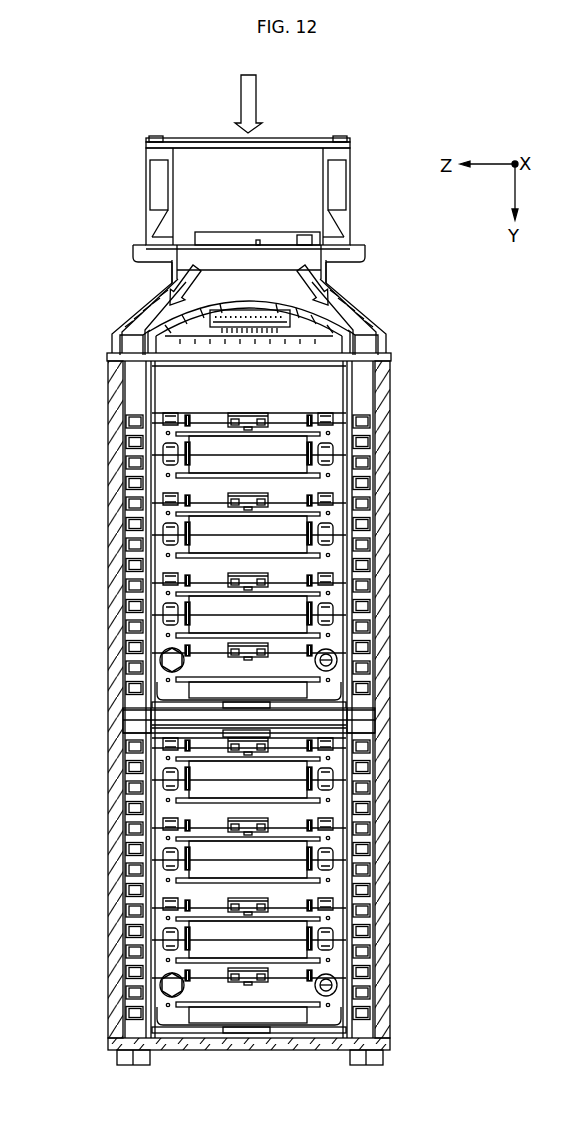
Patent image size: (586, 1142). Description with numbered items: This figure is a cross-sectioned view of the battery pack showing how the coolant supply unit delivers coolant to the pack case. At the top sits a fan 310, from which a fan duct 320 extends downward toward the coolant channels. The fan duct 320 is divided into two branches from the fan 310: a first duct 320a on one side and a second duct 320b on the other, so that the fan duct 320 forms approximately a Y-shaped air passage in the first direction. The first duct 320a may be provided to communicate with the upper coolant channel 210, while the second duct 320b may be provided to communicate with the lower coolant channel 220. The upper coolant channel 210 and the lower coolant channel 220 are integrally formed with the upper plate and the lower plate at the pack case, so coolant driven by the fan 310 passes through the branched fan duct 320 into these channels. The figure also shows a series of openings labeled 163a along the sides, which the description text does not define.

The fan 310 is at (142, 168).
The fan duct 320 is at (128, 240).
The first duct 320a is at (157, 311).
The second duct 320b is at (341, 311).
The upper coolant channel 210 is at (130, 407).
The lower coolant channel 220 is at (368, 407).
The ventilation openings 163a is at (130, 583).